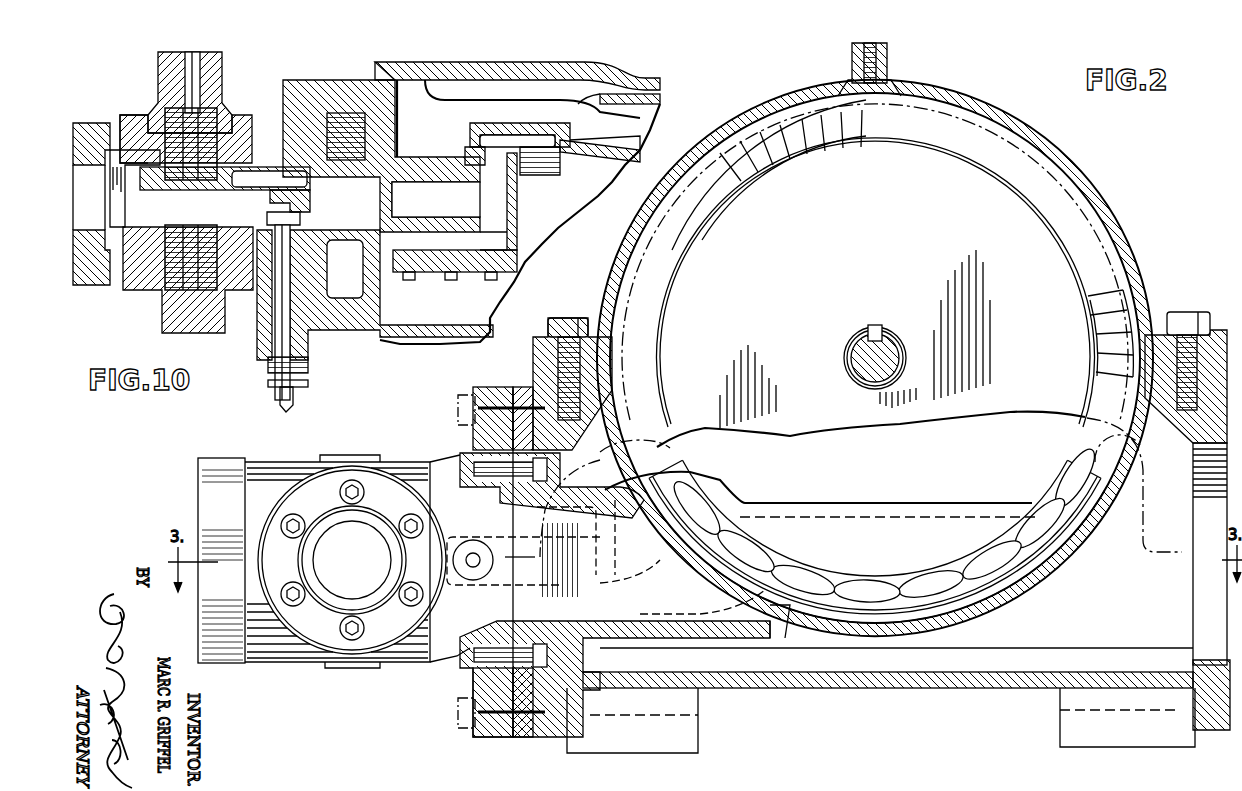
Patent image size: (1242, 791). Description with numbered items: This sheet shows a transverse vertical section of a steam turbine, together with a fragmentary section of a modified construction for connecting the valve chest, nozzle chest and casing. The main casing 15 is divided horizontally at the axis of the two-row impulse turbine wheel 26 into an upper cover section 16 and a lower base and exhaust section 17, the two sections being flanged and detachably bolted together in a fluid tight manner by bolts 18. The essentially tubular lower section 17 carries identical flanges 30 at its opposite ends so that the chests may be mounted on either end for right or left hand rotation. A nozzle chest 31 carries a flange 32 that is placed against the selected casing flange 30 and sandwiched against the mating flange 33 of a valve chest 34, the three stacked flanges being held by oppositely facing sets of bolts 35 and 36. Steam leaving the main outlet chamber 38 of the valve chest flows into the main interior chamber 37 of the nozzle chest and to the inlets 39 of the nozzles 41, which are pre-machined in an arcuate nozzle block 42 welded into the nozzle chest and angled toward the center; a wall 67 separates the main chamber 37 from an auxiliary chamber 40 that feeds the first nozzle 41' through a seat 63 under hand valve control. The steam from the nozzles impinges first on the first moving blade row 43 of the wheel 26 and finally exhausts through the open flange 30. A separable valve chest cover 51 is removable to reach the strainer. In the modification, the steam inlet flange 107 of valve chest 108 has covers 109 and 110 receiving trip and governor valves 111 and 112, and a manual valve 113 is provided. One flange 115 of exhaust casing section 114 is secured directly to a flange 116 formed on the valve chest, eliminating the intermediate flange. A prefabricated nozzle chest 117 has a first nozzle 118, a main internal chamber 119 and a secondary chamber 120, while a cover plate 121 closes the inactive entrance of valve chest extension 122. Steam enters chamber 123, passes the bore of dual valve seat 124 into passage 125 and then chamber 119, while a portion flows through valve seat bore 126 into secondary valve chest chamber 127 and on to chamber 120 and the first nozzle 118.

In FIG. 2, the main casing 15 is at (845, 689).
In FIG. 2, the upper cover section 16 is at (1112, 212).
In FIG. 2, the lower base and exhaust section 17 is at (935, 685).
In FIG. 2, the bolts 18 is at (575, 325).
In FIG. 2, the two-row impulse turbine wheel 26 is at (875, 292).
In FIG. 2, the flanges 30 is at (1192, 432).
In FIG. 2, the nozzle chest 31 is at (800, 655).
In FIG. 2, the flange 32 is at (520, 740).
In FIG. 2, the mating flange 33 is at (490, 740).
In FIG. 2, the valve chest 34 is at (297, 648).
In FIG. 2, the bolts 35 is at (549, 470).
In FIG. 2, the bolts 36 is at (455, 418).
In FIG. 2, the main interior chamber 37 is at (910, 490).
In FIG. 2, the main outlet chamber 38 is at (523, 563).
In FIG. 2, the inlets 39 is at (922, 628).
In FIG. 2, the auxiliary chamber 40 is at (638, 618).
In FIG. 2, the nozzles 41 is at (884, 530).
In FIG. 2, the first nozzle 41' is at (803, 561).
In FIG. 2, the arcuate nozzle block 42 is at (1083, 500).
In FIG. 2, the first moving blade row 43 is at (822, 138).
In FIG. 2, the valve chest cover 51 is at (352, 560).
In FIG. 2, the seat 63 is at (482, 545).
In FIG. 2, the wall 67 is at (722, 500).
In FIG. 10, the steam inlet flange 107 is at (92, 277).
In FIG. 10, the valve chest 108 is at (150, 112).
In FIG. 10, the cover 109 is at (218, 85).
In FIG. 10, the cover 110 is at (163, 298).
In FIG. 10, the trip valve 111 is at (197, 283).
In FIG. 10, the governor valve 112 is at (200, 140).
In FIG. 10, the manual valve 113 is at (302, 220).
In FIG. 10, the exhaust casing section 114 is at (503, 70).
In FIG. 10, the flange 115 is at (350, 322).
In FIG. 10, the flange 116 is at (303, 97).
In FIG. 10, the nozzle chest 117 is at (618, 96).
In FIG. 10, the first nozzle 118 is at (604, 158).
In FIG. 10, the main internal chamber 119 is at (507, 96).
In FIG. 10, the secondary chamber 120 is at (518, 136).
In FIG. 10, the cover plate 121 is at (462, 274).
In FIG. 10, the valve chest extension 122 is at (493, 243).
In FIG. 10, the chamber 123 is at (135, 188).
In FIG. 10, the dual valve seat 124 is at (212, 190).
In FIG. 10, the passage 125 is at (269, 180).
In FIG. 10, the valve seat bore 126 is at (312, 199).
In FIG. 10, the secondary valve chest chamber 127 is at (436, 199).